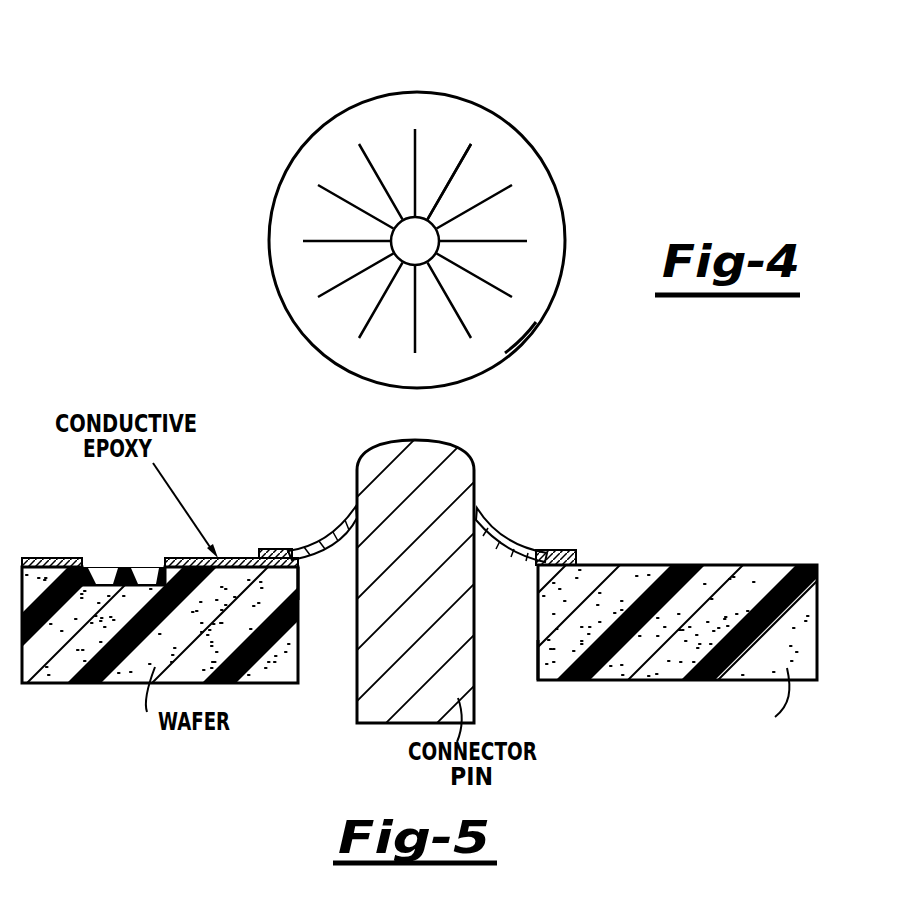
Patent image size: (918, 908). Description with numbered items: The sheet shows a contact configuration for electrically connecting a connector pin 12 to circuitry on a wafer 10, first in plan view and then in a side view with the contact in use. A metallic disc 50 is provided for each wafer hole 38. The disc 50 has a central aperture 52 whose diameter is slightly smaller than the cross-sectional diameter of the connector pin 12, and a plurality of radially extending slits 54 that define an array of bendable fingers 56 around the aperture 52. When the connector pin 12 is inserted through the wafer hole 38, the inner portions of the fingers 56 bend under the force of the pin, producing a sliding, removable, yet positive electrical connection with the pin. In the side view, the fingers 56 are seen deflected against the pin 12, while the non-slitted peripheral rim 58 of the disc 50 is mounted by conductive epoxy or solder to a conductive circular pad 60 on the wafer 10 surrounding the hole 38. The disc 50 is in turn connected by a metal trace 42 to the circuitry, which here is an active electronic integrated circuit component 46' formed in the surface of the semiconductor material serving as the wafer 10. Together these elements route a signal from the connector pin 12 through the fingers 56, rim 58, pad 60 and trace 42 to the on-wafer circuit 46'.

In FIG. 5, the wafer 10 is at (807, 620).
In FIG. 5, the connector pin 12 is at (363, 713).
In FIG. 5, the wafer hole 38 is at (535, 655).
In FIG. 5, the metal trace 42 is at (46, 560).
In FIG. 5, the active electronic integrated circuit component 46' is at (123, 540).
In FIG. 4, the metallic disc 50 is at (548, 215).
In FIG. 5, the metallic disc 50 is at (512, 535).
In FIG. 4, the aperture 52 is at (437, 227).
In FIG. 4, the radially extending slit 54 is at (465, 167).
In FIG. 4, the bendable finger 56 is at (325, 255).
In FIG. 5, the bendable finger 56 is at (338, 530).
In FIG. 4, the non-slitted peripheral rim 58 is at (522, 327).
In FIG. 5, the non-slitted peripheral rim 58 is at (270, 550).
In FIG. 5, the conductive circular pad 60 is at (302, 567).